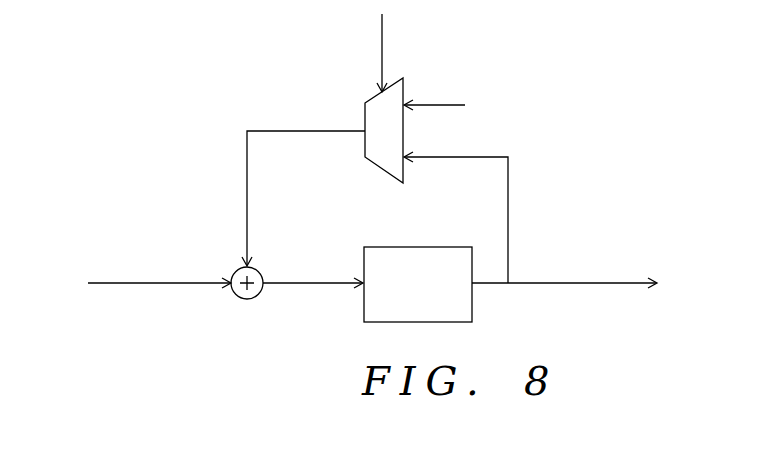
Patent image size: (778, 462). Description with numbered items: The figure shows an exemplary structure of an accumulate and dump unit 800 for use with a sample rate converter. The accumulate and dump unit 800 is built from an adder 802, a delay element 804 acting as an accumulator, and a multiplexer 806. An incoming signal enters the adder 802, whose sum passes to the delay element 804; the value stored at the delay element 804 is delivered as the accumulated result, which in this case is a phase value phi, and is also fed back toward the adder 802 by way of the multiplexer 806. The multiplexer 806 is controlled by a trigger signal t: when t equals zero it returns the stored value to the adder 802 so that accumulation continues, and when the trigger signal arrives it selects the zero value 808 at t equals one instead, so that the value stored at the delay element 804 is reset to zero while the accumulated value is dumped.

The accumulate and dump unit 800 is at (198, 55).
The adder 802 is at (236, 271).
The delay element 804 is at (418, 247).
The multiplexer 806 is at (365, 118).
The input 808 is at (493, 62).